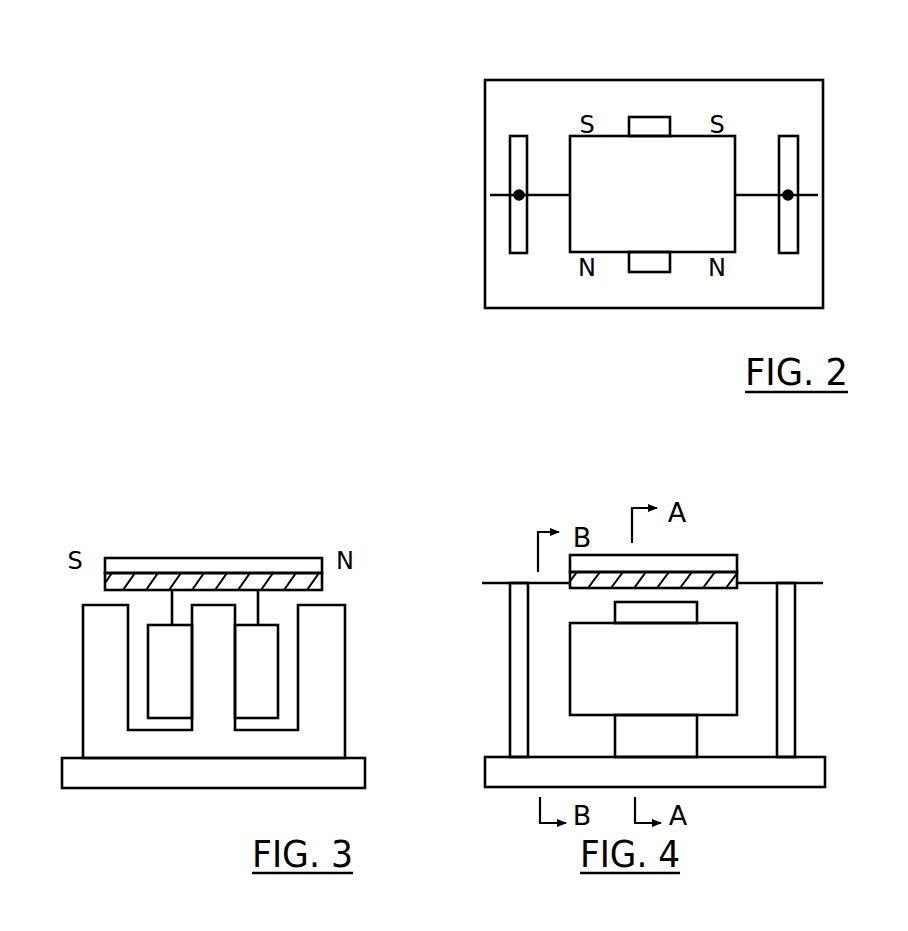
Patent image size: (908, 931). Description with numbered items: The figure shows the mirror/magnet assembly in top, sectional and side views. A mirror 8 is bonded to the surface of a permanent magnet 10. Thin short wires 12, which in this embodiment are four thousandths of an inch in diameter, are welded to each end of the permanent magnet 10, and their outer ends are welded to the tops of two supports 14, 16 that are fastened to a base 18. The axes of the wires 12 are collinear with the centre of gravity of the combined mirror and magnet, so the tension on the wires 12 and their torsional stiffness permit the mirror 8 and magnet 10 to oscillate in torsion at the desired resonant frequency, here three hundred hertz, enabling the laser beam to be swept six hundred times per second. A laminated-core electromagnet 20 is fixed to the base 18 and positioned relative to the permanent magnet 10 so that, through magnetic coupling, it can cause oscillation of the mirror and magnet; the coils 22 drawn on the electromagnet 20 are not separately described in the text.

In FIG. 2, the mirror 8 is at (650, 145).
In FIG. 3, the mirror 8 is at (222, 558).
In FIG. 4, the mirror 8 is at (720, 557).
In FIG. 3, the permanent magnet 10 is at (320, 586).
In FIG. 4, the permanent magnet 10 is at (735, 583).
In FIG. 2, the wires 12 is at (552, 200).
In FIG. 2, the support 14 is at (512, 165).
In FIG. 4, the support 14 is at (510, 645).
In FIG. 2, the support 16 is at (793, 225).
In FIG. 3, the support 16 is at (170, 611).
In FIG. 4, the support 16 is at (797, 725).
In FIG. 2, the base 18 is at (790, 80).
In FIG. 3, the base 18 is at (355, 777).
In FIG. 4, the base 18 is at (825, 783).
In FIG. 2, the laminated-core electromagnet 20 is at (653, 272).
In FIG. 3, the laminated-core electromagnet 20 is at (81, 664).
In FIG. 4, the laminated-core electromagnet 20 is at (675, 745).
In FIG. 3, the coil 22 is at (150, 709).
In FIG. 4, the coil 22 is at (575, 690).